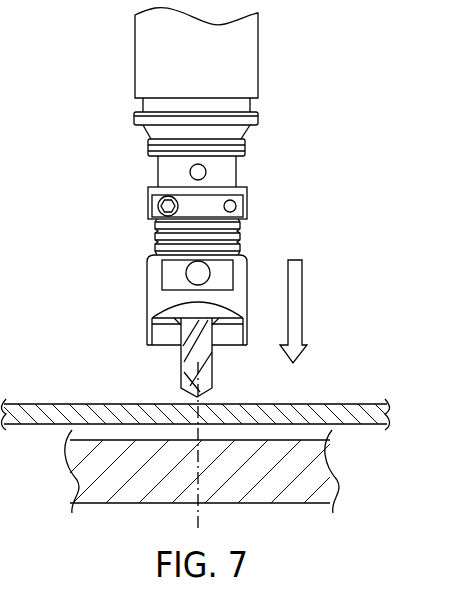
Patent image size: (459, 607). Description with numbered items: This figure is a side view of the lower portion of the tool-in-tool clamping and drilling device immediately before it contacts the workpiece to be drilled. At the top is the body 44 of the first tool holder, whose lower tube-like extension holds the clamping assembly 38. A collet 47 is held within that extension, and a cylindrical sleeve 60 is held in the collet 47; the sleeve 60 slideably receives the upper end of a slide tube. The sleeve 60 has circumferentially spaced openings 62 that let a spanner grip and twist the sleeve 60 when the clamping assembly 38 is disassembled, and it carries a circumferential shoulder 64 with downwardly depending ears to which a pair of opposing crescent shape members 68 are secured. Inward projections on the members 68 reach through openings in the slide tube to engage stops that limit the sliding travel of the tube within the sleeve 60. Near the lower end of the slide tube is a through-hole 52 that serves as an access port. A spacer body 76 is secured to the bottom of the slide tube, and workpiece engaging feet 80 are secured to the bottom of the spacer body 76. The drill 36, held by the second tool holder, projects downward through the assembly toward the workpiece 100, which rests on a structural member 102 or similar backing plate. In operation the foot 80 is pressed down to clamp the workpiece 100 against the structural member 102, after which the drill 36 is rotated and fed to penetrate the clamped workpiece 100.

The drill 36 is at (200, 362).
The clamping assembly 38 is at (281, 237).
The body 44 is at (157, 63).
The collet 47 is at (247, 148).
The through-hole 52 is at (188, 273).
The cylindrical sleeve 60 is at (226, 171).
The openings 62 is at (190, 172).
The circumferential shoulder 64 is at (152, 192).
The crescent shape members 68 is at (236, 206).
The spacer body 76 is at (160, 298).
The workpiece engaging feet 80 is at (163, 338).
The workpiece 100 is at (345, 408).
The structural member 102 is at (312, 470).